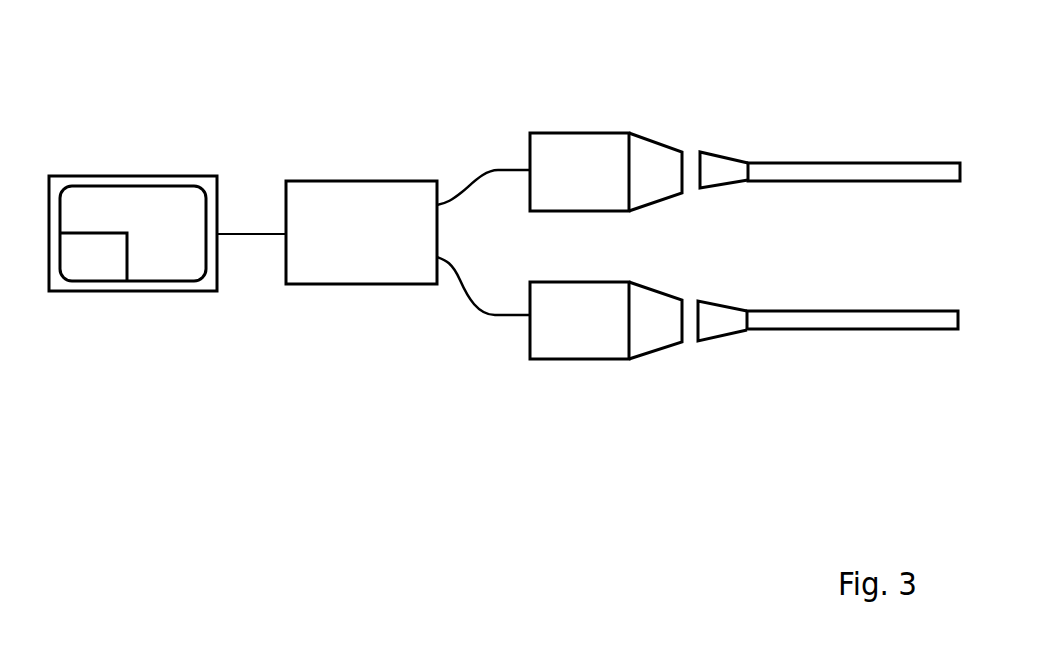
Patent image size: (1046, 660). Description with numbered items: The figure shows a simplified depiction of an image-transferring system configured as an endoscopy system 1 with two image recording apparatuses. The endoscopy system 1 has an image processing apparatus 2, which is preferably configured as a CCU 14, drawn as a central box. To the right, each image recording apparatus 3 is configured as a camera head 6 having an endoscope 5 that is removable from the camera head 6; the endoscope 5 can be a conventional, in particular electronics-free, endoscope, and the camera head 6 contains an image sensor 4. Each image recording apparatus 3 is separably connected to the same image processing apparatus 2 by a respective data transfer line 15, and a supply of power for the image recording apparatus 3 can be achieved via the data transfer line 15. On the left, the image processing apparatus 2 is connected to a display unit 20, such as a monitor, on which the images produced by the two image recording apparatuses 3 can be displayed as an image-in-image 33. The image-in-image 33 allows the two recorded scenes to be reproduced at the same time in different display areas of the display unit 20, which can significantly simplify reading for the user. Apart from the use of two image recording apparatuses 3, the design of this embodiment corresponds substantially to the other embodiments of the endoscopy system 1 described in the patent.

The endoscopy system 1 is at (740, 232).
The image processing apparatus 2 is at (361, 162).
The image recording apparatus 3 is at (740, 232).
The image sensor 4 is at (638, 172).
The endoscope 5 is at (791, 164).
The camera head 6 is at (590, 157).
The CCU 14 is at (350, 243).
The data transfer line 15 is at (476, 168).
The display unit 20 is at (133, 279).
The image-in-image 33 is at (84, 265).